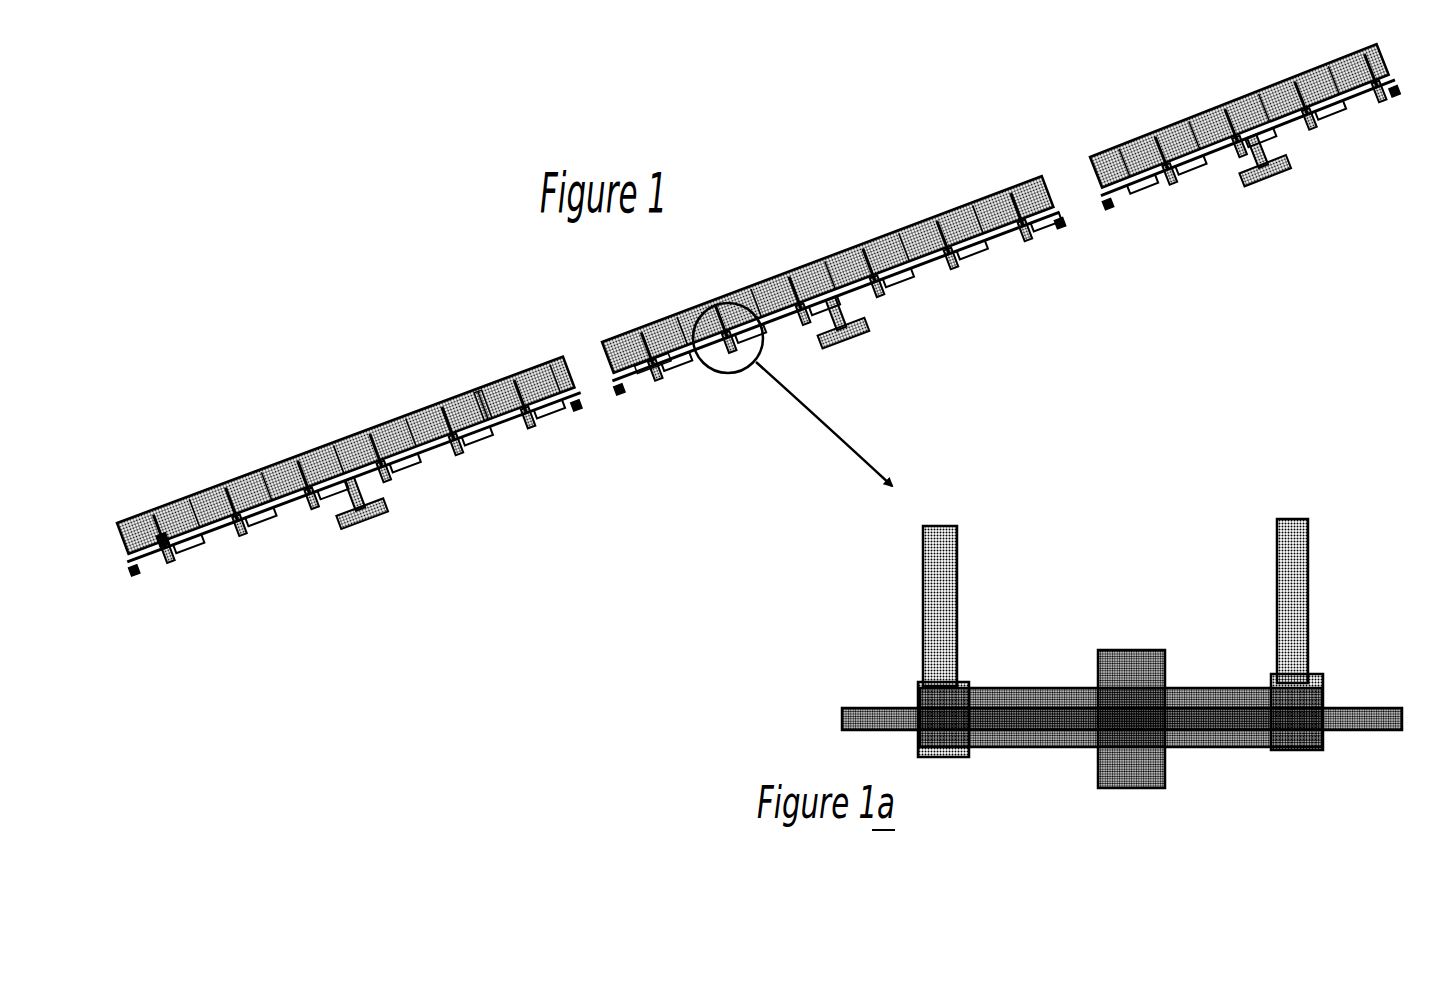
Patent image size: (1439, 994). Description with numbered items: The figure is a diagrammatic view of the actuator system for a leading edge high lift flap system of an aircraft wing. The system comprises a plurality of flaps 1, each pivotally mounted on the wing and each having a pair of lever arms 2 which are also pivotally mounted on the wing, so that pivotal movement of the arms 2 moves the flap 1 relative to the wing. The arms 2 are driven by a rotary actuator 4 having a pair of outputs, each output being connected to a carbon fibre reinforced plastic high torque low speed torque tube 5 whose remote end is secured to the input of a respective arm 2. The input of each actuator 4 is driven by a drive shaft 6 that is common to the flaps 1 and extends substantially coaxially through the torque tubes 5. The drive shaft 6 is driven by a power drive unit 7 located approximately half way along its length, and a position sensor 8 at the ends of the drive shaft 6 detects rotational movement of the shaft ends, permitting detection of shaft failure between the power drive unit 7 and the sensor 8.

In FIG. 1, the flap 1 is at (845, 256).
In FIG. 1, the lever arm 2 is at (484, 402).
In FIG. 1A, the lever arm 2 is at (940, 622).
In FIG. 1, the rotary actuator 4 is at (166, 537).
In FIG. 1A, the rotary actuator 4 is at (1142, 745).
In FIG. 1, the torque tube 5 is at (655, 344).
In FIG. 1A, the torque tube 5 is at (1032, 748).
In FIG. 1, the drive shaft 6 is at (278, 506).
In FIG. 1A, the drive shaft 6 is at (1378, 700).
In FIG. 1, the power drive unit 7 is at (352, 480).
In FIG. 1, the position sensor 8 is at (128, 592).